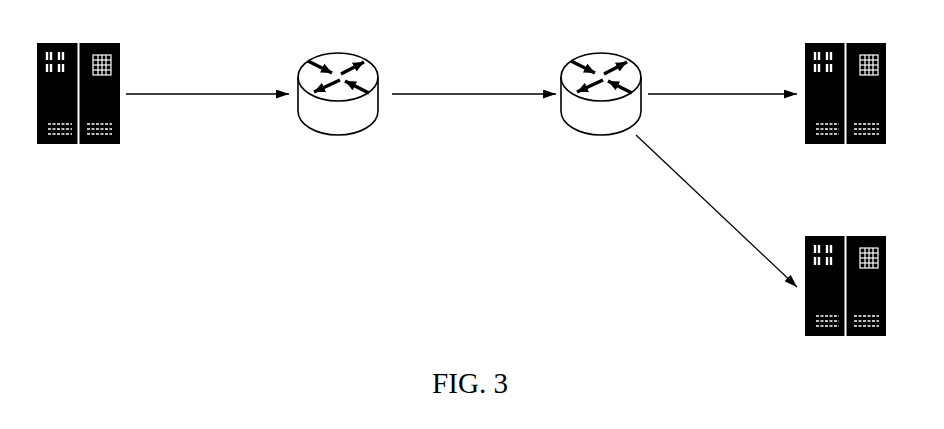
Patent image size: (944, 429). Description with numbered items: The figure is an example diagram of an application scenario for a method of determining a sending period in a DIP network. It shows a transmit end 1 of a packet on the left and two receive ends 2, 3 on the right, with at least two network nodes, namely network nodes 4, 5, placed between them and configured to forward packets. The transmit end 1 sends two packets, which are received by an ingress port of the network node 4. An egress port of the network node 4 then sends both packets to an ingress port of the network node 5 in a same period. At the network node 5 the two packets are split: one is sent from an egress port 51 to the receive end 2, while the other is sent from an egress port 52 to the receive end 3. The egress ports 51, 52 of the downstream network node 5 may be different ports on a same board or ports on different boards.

The transmit end 1 is at (91, 79).
The receive end 2 is at (846, 79).
The receive end 3 is at (846, 272).
The network node 4 is at (338, 74).
The network node 5 is at (613, 74).
The egress port 51 is at (722, 78).
The egress port 52 is at (707, 211).